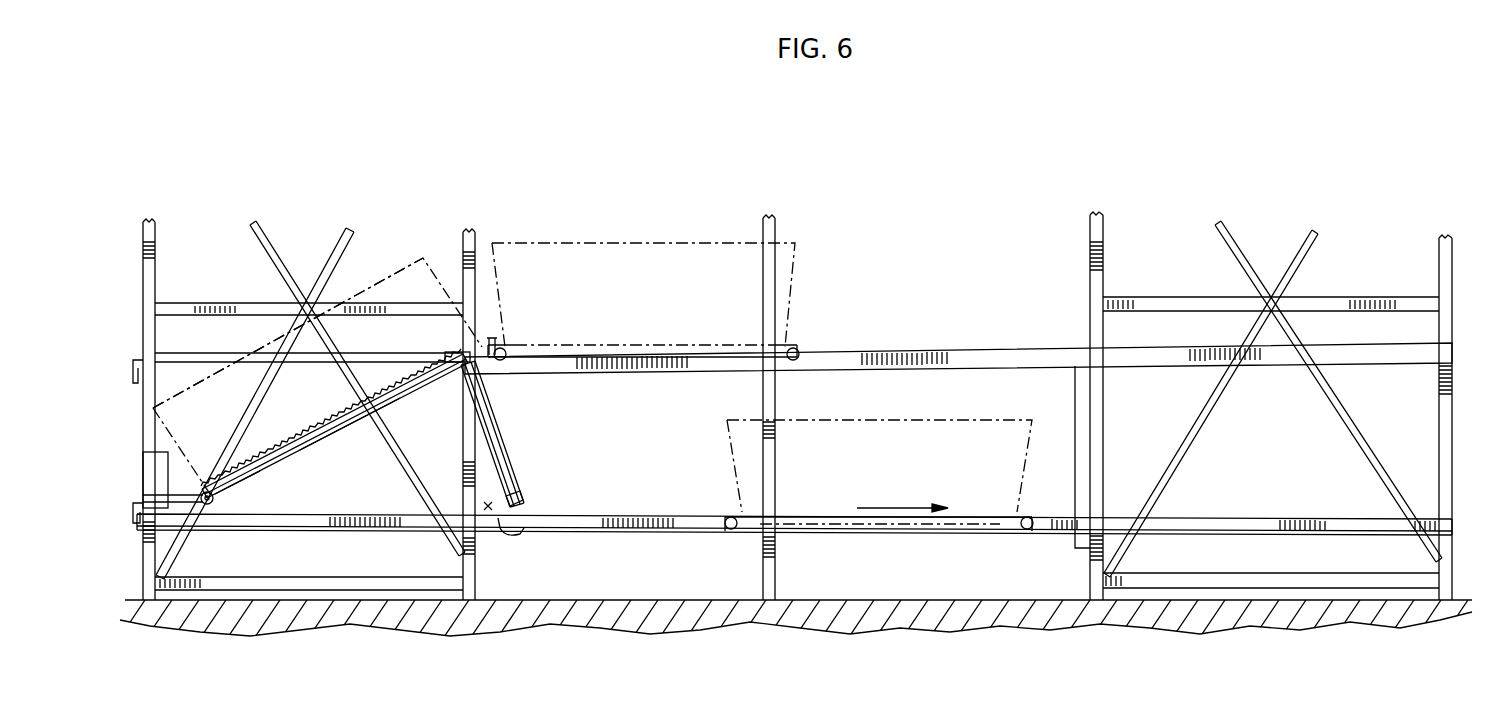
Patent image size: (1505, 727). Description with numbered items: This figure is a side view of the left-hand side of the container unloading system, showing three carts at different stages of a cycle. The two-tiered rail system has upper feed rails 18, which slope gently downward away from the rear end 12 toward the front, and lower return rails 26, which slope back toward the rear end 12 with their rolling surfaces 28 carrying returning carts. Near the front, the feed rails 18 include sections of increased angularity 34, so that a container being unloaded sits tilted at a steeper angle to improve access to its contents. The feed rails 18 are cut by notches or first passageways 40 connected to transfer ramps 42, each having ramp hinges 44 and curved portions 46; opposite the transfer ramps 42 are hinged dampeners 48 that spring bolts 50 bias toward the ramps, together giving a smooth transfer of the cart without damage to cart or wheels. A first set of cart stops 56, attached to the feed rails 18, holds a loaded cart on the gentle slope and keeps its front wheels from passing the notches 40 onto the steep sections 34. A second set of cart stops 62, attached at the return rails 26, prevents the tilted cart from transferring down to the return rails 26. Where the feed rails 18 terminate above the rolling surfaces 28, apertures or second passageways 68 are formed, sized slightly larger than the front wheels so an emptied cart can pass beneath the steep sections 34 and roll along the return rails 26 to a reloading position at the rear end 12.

The rear end 12 is at (1460, 500).
The feed rails 18 is at (897, 353).
The return rails 26 is at (685, 524).
The rolling surfaces 28 is at (392, 530).
The sections of increased angularity 34 is at (312, 455).
The notches or first passageways 40 is at (450, 358).
The transfer ramps 42 is at (462, 418).
The ramp hinges 44 is at (492, 518).
The curved portions 46 is at (500, 533).
The hinged dampeners 48 is at (492, 449).
The spring bolts 50 is at (508, 493).
The first set of cart stops 56 is at (137, 358).
The second set of cart stops 62 is at (130, 524).
The apertures or second passageways 68 is at (205, 504).